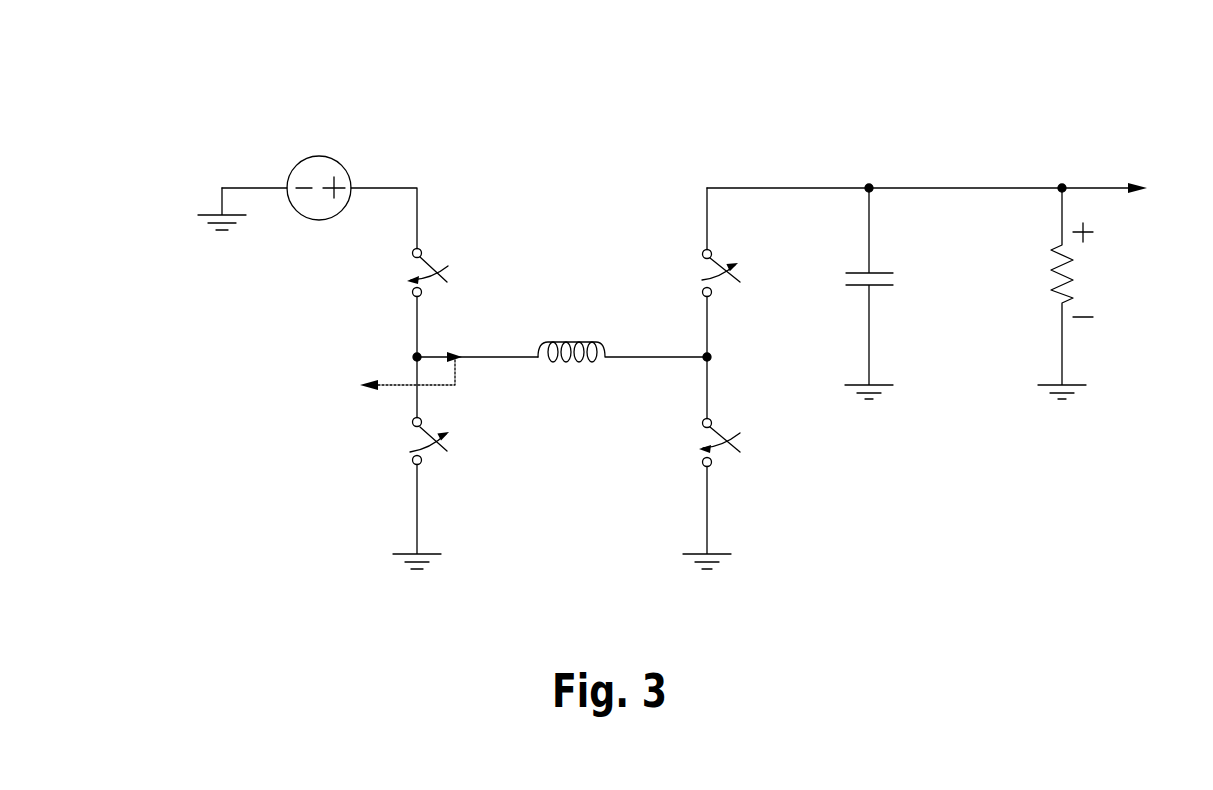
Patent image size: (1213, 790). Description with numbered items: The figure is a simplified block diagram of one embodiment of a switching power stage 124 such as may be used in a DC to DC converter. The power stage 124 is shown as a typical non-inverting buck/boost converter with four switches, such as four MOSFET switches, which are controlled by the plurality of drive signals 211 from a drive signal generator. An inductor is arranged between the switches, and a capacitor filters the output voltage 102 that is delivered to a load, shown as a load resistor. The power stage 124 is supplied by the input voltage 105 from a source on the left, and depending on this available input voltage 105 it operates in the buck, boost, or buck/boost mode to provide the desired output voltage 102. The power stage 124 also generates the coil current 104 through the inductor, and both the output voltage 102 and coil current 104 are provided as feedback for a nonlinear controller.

The switching power stage 124 is at (1093, 88).
The input voltage 105 is at (338, 162).
The drive signals 211 is at (465, 272).
The coil current 104 is at (396, 380).
The output voltage 102 is at (1090, 187).